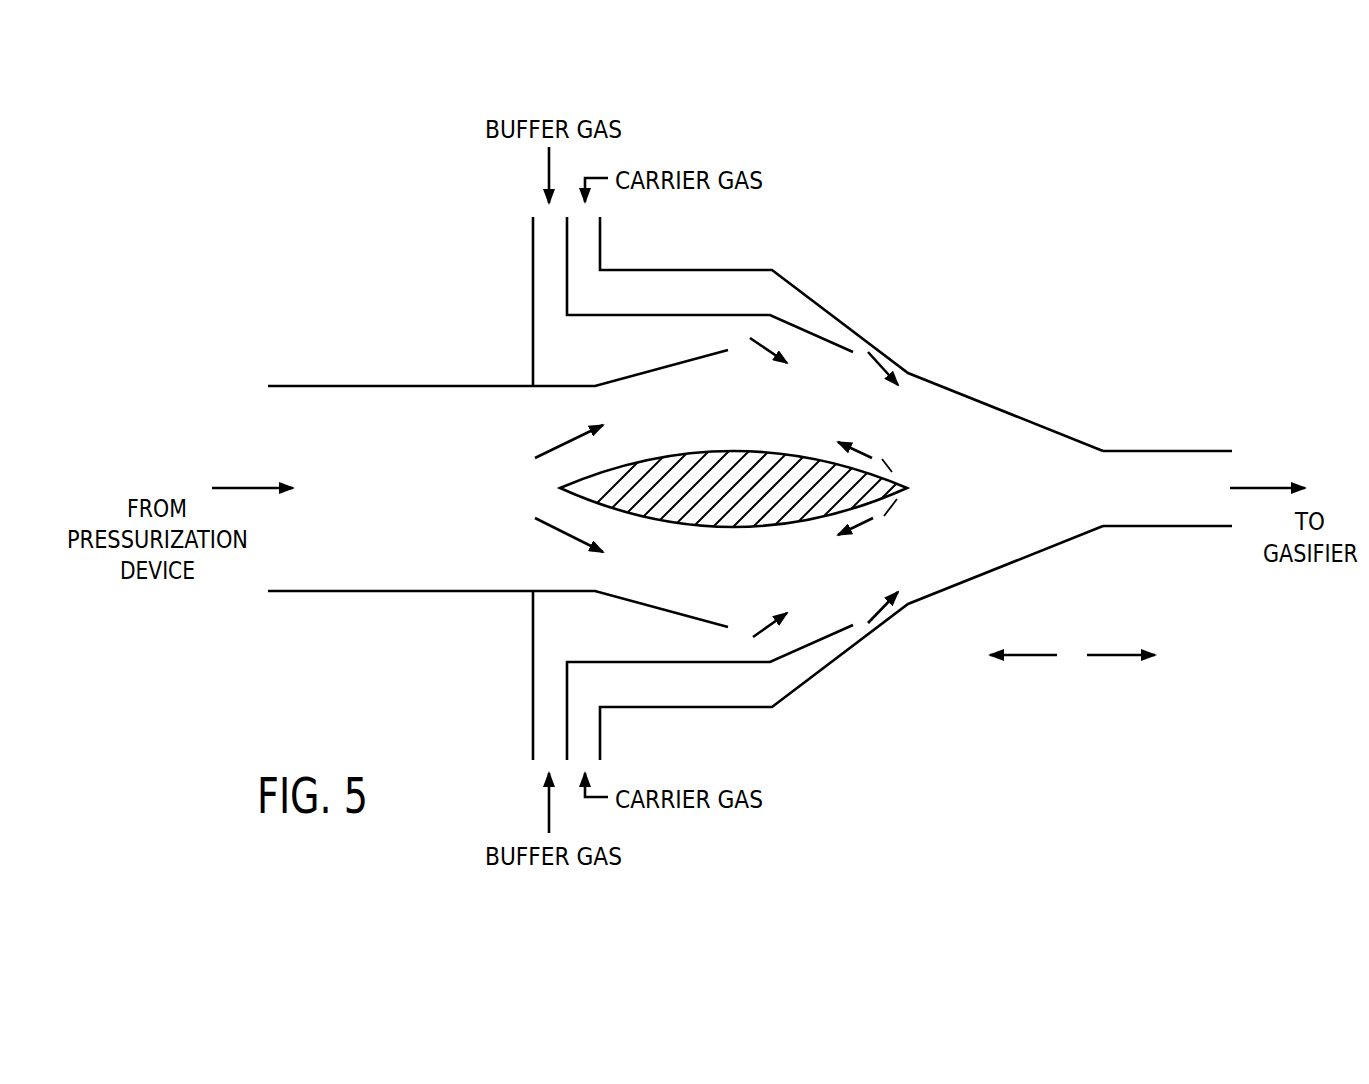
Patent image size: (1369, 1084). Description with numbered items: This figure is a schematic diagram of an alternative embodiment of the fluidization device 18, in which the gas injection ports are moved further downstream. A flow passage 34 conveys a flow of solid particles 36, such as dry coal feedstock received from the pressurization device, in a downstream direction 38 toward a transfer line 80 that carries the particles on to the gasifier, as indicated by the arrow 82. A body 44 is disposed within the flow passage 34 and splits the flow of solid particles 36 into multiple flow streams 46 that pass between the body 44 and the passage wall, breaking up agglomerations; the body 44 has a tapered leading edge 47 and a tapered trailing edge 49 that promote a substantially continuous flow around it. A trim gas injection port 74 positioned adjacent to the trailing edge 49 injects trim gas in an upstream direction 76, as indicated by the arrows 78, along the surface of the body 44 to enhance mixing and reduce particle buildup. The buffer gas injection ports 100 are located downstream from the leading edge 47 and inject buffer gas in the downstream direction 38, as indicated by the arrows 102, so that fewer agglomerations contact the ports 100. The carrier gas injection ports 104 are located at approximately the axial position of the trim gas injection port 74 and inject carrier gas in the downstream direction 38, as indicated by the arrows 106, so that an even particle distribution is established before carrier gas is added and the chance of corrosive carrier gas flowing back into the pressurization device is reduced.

The fluidization device 18 is at (932, 276).
The flow passage 34 is at (392, 593).
The flow of solid particles 36 is at (235, 487).
The downstream direction 38 is at (1115, 657).
The body 44 is at (728, 450).
The flow streams 46 is at (552, 440).
The tapered leading edge 47 is at (560, 488).
The tapered trailing edge 49 is at (907, 488).
The trim gas injection port 74 is at (887, 466).
The upstream direction 76 is at (1030, 657).
The flow of trim gas 78 is at (862, 453).
The transfer line 80 is at (1167, 451).
The flow to gasifier 82 is at (1262, 487).
The buffer gas injection ports 100 is at (742, 340).
The flow of buffer gas 102 is at (758, 353).
The carrier gas injection ports 104 is at (868, 345).
The flow of carrier gas 106 is at (882, 364).